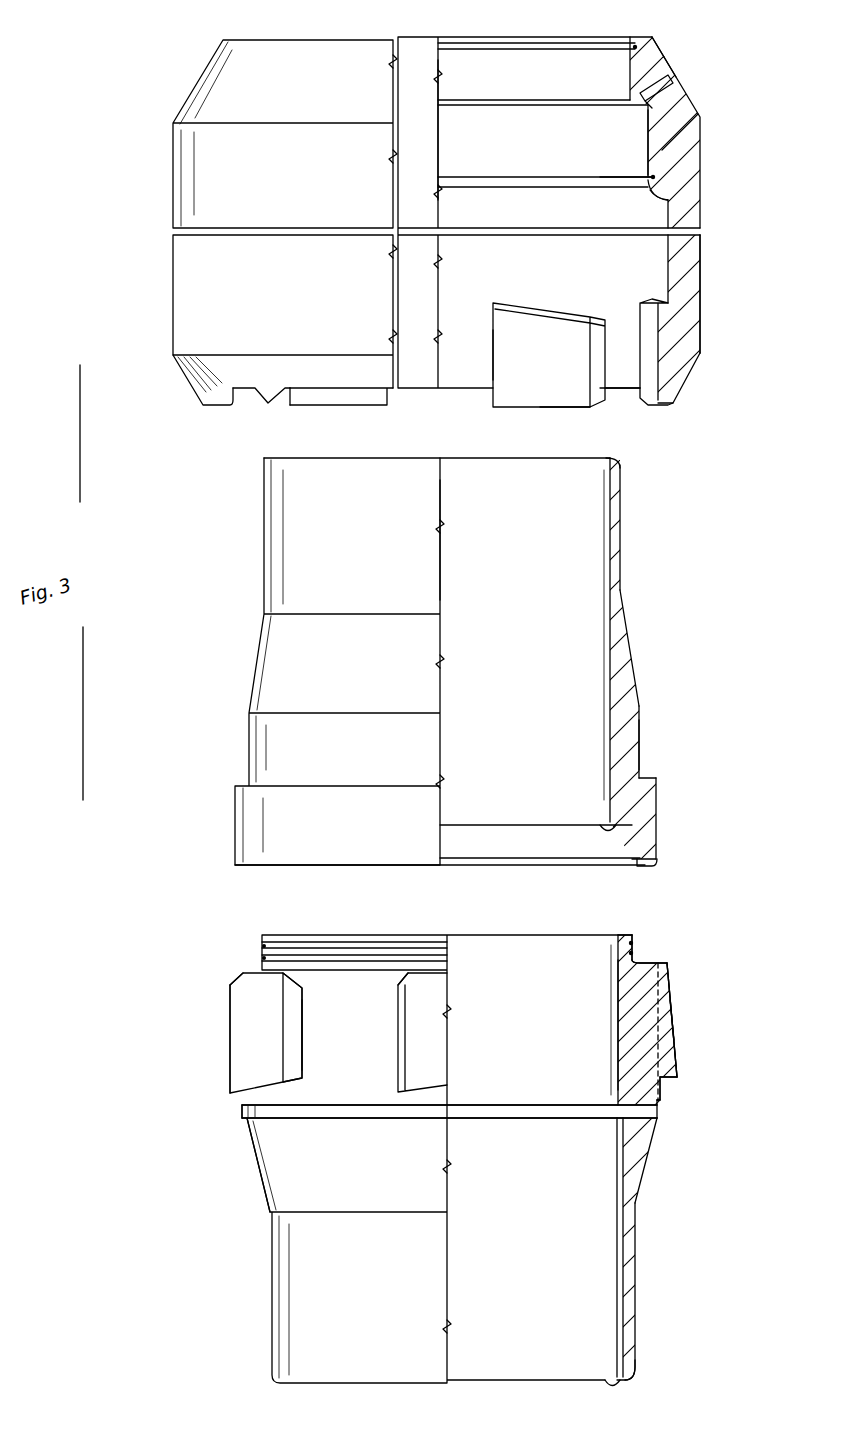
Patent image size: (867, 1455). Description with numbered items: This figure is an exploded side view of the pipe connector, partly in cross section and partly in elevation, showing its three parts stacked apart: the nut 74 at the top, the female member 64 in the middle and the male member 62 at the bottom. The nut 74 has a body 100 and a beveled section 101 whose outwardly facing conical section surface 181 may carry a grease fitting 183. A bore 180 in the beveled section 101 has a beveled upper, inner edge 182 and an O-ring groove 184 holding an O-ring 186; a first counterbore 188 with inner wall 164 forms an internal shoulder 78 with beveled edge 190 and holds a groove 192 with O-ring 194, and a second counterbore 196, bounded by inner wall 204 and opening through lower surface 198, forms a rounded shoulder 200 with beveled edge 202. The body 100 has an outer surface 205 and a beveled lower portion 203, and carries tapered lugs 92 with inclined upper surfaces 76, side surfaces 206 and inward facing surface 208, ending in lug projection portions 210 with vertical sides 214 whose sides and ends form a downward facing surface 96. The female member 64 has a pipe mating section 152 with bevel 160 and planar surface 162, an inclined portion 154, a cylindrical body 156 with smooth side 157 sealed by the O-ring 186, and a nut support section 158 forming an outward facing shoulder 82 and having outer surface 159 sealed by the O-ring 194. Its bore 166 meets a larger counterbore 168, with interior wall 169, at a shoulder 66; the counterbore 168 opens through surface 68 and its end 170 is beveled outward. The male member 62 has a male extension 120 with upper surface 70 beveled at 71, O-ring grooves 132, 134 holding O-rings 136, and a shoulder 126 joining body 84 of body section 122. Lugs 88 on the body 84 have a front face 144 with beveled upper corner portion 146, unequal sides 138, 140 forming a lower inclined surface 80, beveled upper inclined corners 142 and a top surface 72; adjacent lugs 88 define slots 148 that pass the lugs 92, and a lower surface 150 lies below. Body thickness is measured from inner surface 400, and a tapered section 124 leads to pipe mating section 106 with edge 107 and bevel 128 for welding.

The male member 62 is at (229, 993).
The female member 64 is at (644, 697).
The shoulder 66 is at (605, 822).
The surface 68 is at (655, 864).
The upper surface 70 is at (652, 926).
The bevel 71 is at (642, 933).
The top surface 72 is at (664, 968).
The nut 74 is at (668, 242).
The upper surfaces 76 is at (527, 305).
The internal shoulder 78 is at (628, 104).
The lower inclined surface 80 is at (243, 1100).
The outward facing shoulder 82 is at (648, 778).
The body 84 is at (344, 1119).
The lugs 88 is at (676, 1049).
The lugs 92 is at (565, 374).
The downward facing surface 96 is at (335, 408).
The body 100 is at (688, 211).
The beveled section 101 is at (682, 110).
The pipe mating section 106 is at (639, 1263).
The edge 107 is at (607, 1378).
The male extension 120 is at (647, 942).
The body section 122 is at (664, 1096).
The tapered section 124 is at (648, 1158).
The shoulder 126 is at (665, 963).
The bevel 128 is at (640, 1378).
The O-ring groove 132 is at (318, 946).
The O-ring groove 134 is at (364, 958).
The O-rings 136 is at (262, 946).
The side 138 is at (290, 1018).
The side 140 is at (397, 1052).
The upper inclined corners 142 is at (291, 975).
The front face 144 is at (679, 1021).
The upper corner portion 146 is at (260, 983).
The slots 148 is at (331, 1040).
The lower surface 150 is at (286, 1113).
The pipe mating section 152 is at (621, 507).
The inclined portion 154 is at (633, 668).
The body 156 is at (641, 737).
The smooth side 157 is at (640, 722).
The nut support section 158 is at (657, 792).
The outer surface 159 is at (655, 816).
The bevel 160 is at (620, 458).
The planar surface 162 is at (606, 455).
The inner wall 164 is at (646, 126).
The bore 166 is at (576, 494).
The counterbore 168 is at (544, 855).
The interior wall 169 is at (485, 826).
The end 170 is at (450, 858).
The bore 180 is at (466, 62).
The conical section surface 181 is at (670, 64).
The upper, inner edge 182 is at (631, 42).
The grease fitting 183 is at (648, 90).
The O-ring groove 184 is at (660, 48).
The O-ring 186 is at (542, 48).
The first counterbore 188 is at (690, 124).
The beveled edge 190 is at (462, 100).
The groove 192 is at (560, 176).
The O-ring 194 is at (660, 178).
The second counterbore 196 is at (672, 191).
The lower surface 198 is at (257, 392).
The rounded shoulder 200 is at (646, 184).
The beveled edge 202 is at (470, 186).
The beveled lower portion 203 is at (705, 354).
The inner wall 204 is at (657, 264).
The outer surface 205 is at (701, 261).
The side surfaces 206 is at (600, 338).
The inward facing surface 208 is at (536, 351).
The lug projection portion 210 is at (208, 407).
The sides 214 is at (284, 398).
The inner surface 400 is at (617, 1022).